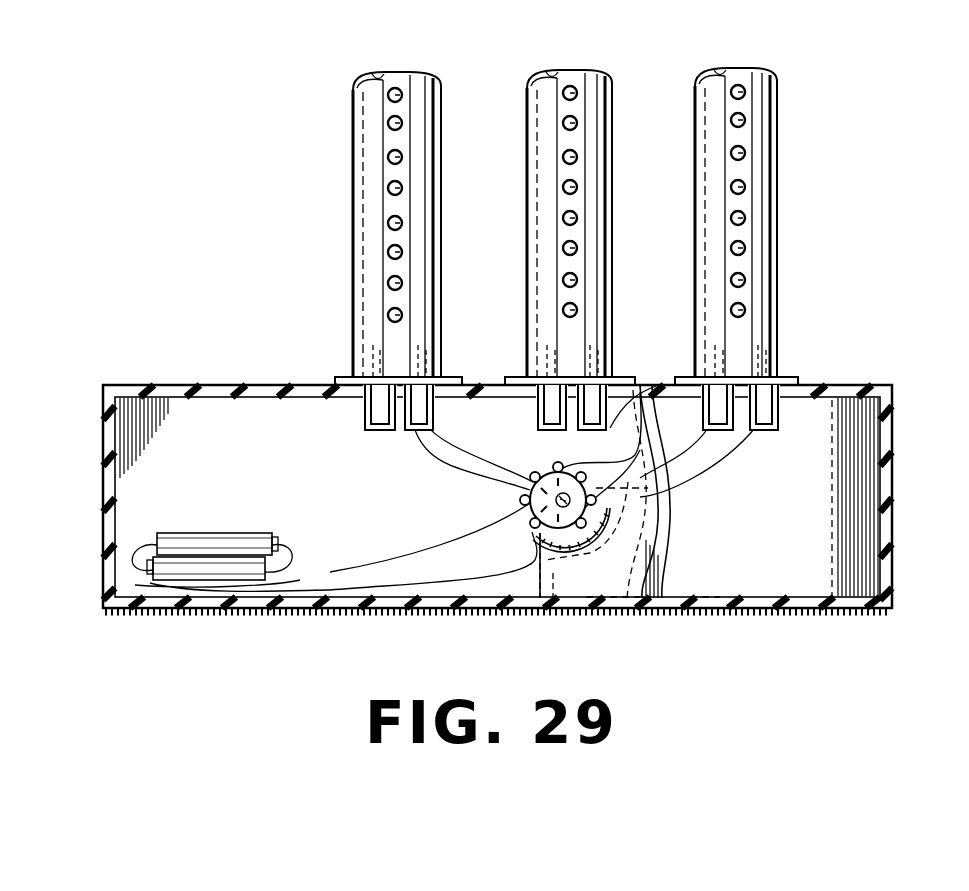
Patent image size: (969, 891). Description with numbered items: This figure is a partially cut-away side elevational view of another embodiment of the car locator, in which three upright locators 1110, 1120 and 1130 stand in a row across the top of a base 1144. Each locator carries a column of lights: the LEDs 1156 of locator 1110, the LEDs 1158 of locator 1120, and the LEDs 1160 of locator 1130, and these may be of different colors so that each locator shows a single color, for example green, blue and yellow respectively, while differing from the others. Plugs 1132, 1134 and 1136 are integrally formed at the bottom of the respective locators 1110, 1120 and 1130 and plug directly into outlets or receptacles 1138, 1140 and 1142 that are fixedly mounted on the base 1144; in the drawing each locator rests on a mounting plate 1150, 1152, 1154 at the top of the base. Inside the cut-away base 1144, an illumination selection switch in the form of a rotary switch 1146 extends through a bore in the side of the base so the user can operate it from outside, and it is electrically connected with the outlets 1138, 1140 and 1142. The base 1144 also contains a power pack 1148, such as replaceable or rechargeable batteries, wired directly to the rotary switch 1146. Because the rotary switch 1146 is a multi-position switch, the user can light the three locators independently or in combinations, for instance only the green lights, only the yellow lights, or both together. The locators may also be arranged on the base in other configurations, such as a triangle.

The locator 1110 is at (345, 78).
The locator 1120 is at (520, 72).
The locator 1130 is at (712, 68).
The plug 1132 is at (383, 364).
The plug 1134 is at (590, 365).
The plug 1136 is at (760, 356).
The outlet 1138 is at (368, 424).
The outlet 1140 is at (548, 418).
The outlet 1142 is at (775, 425).
The base 1144 is at (100, 380).
The rotary switch 1146 is at (535, 500).
The power pack 1148 is at (200, 542).
The first mounting plate 1150 is at (342, 378).
The second mounting plate 1152 is at (627, 376).
The third mounting plate 1154 is at (792, 378).
The LEDs 1156 is at (452, 300).
The LEDs 1158 is at (624, 300).
The LEDs 1160 is at (810, 298).